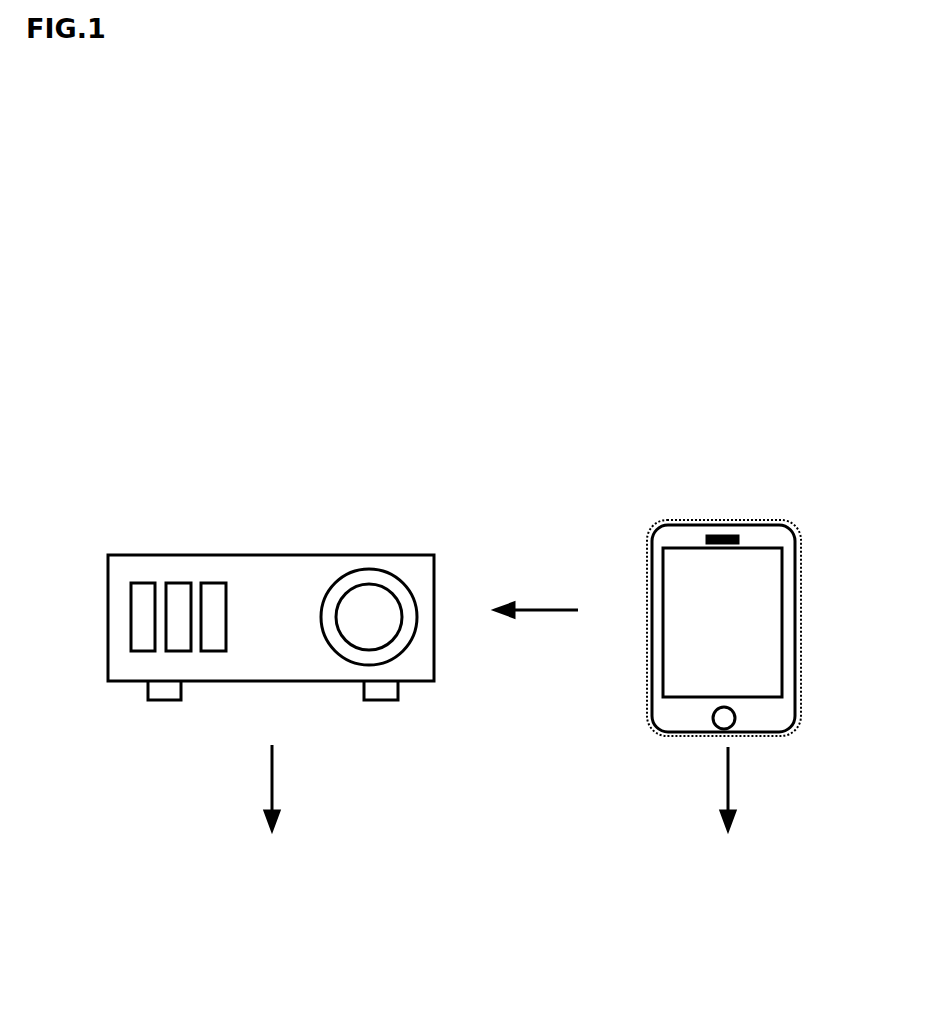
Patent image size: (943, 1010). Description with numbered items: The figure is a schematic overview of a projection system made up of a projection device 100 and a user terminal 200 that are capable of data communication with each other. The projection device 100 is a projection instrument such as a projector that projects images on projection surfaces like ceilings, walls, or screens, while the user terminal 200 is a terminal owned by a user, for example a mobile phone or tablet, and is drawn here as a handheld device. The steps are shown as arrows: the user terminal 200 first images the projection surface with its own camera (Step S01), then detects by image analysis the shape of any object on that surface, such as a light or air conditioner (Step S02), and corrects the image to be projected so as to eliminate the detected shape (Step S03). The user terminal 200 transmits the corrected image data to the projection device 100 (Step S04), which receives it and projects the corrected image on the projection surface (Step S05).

The projection device 100 is at (434, 555).
The user terminal 200 is at (763, 527).
The imaging step S01 is at (755, 788).
The object shape detecting step S02 is at (716, 444).
The image correcting step S03 is at (677, 532).
The image data transmitting step S04 is at (536, 586).
The projecting step S05 is at (300, 787).